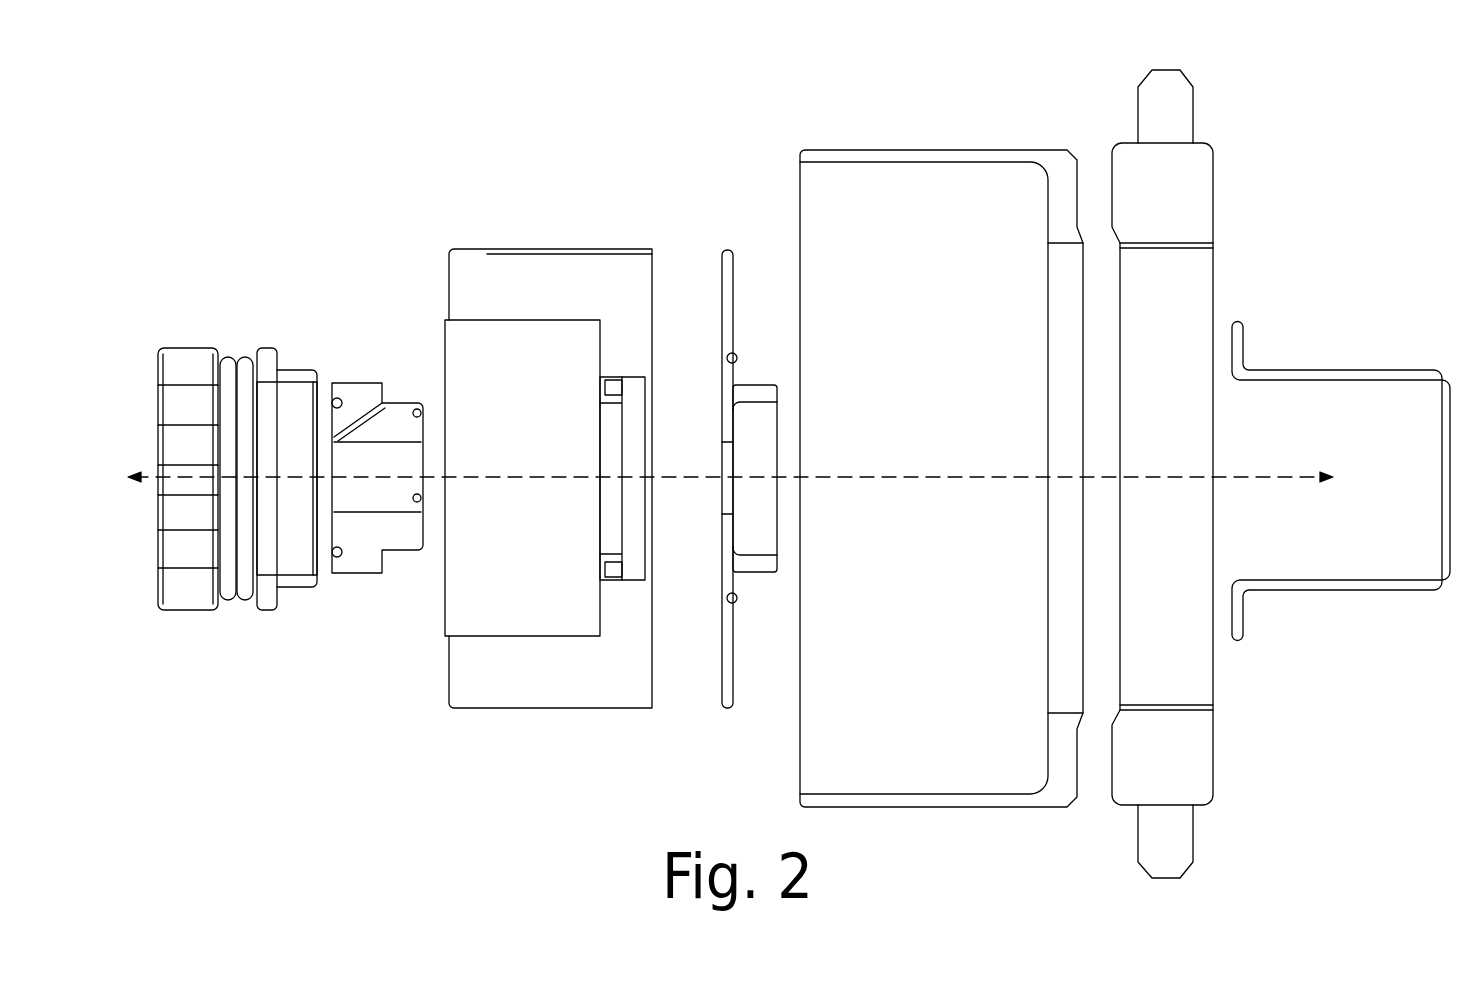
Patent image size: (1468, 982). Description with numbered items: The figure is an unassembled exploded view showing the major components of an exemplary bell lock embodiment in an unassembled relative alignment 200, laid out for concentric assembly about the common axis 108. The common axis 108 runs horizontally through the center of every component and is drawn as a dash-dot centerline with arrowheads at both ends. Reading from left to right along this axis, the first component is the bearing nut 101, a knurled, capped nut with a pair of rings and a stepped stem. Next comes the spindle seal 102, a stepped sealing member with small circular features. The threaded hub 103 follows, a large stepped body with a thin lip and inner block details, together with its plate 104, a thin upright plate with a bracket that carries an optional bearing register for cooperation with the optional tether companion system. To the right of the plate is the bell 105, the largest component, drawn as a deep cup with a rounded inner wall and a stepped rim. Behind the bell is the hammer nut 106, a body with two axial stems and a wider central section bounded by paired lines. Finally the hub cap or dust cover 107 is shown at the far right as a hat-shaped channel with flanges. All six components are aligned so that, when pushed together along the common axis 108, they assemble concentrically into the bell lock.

The unassembled relative alignment 200 is at (767, 34).
The bearing nut 101 is at (274, 324).
The spindle seal 102 is at (395, 362).
The threaded hub 103 is at (575, 226).
The plate 104 is at (748, 232).
The bell 105 is at (960, 136).
The hammer nut 106 is at (1184, 59).
The hub cap or dust cover 107 is at (1352, 347).
The common axis 108 is at (735, 478).